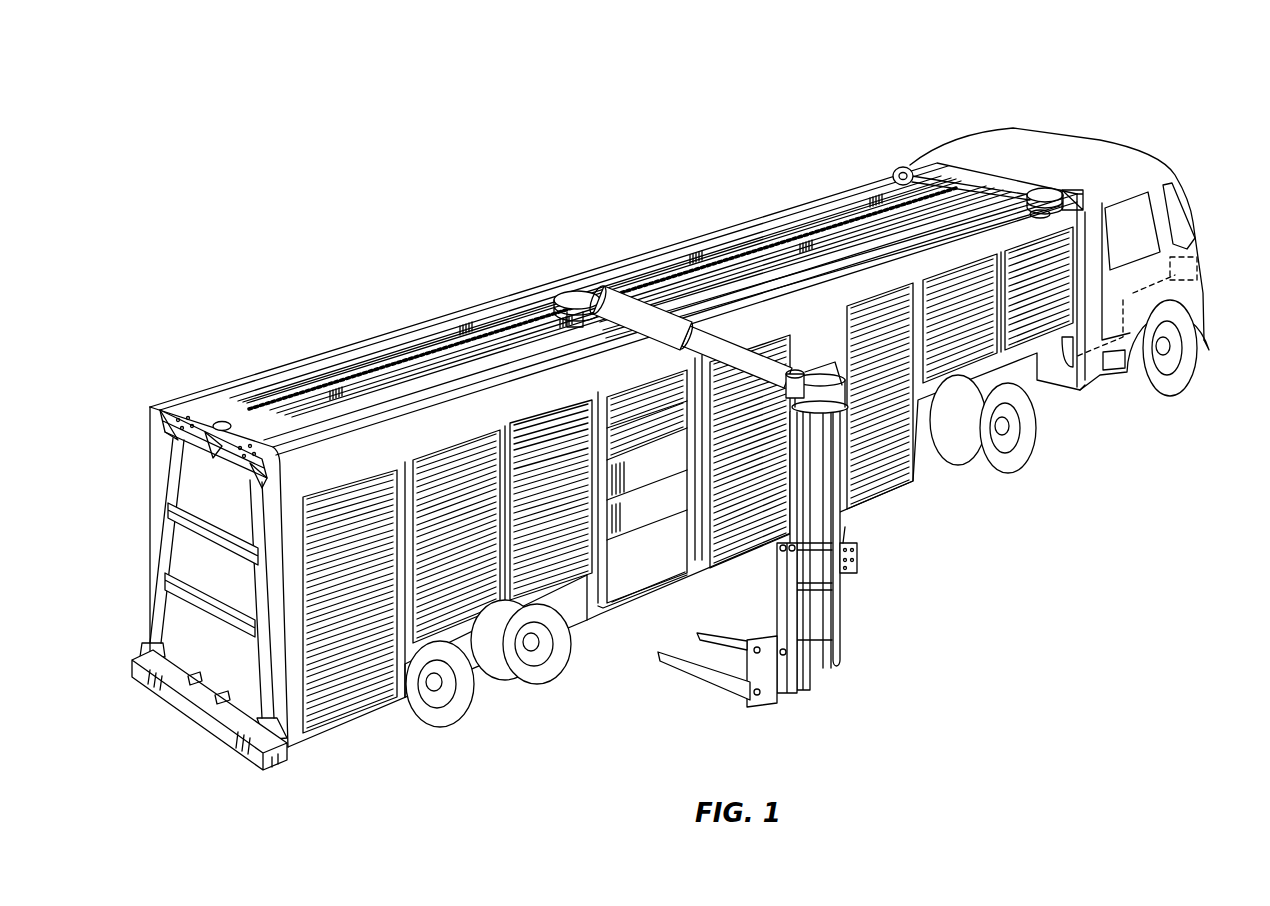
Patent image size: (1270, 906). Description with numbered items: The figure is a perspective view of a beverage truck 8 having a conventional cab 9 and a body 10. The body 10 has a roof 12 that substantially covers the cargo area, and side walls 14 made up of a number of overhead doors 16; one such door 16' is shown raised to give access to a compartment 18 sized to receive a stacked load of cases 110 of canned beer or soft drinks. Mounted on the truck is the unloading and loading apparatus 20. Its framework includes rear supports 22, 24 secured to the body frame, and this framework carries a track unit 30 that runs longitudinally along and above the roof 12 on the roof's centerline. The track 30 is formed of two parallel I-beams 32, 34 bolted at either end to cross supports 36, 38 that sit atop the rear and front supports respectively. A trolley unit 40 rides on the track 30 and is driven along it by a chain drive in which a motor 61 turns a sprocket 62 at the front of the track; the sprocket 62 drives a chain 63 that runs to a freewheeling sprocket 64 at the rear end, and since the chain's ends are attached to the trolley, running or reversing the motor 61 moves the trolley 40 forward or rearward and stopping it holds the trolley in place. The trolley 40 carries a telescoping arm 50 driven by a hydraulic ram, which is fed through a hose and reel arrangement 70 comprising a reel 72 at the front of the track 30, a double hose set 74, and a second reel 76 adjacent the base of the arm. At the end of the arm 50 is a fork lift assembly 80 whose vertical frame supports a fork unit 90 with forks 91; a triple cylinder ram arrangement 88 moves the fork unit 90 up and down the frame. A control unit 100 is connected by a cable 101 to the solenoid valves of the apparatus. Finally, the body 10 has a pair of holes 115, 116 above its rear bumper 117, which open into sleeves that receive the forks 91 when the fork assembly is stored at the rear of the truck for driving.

The beverage truck 8 is at (950, 487).
The cab 9 is at (1202, 286).
The body 10 is at (910, 503).
The roof 12 is at (735, 233).
The side walls 14 is at (405, 470).
The overhead doors 16 is at (688, 480).
The raised overhead door 16' is at (630, 399).
The compartment 18 is at (700, 560).
The unloading and loading apparatus 20 is at (514, 303).
The rear support 22 is at (173, 546).
The rear support 24 is at (252, 575).
The track unit 30 is at (495, 343).
The I-beam 32 is at (862, 203).
The I-beam 34 is at (861, 263).
The rear cross support 36 is at (160, 428).
The front cross support 38 is at (1082, 197).
The trolley unit 40 is at (604, 332).
The telescoping arm 50 is at (598, 282).
The motor 61 is at (901, 167).
The sprocket 62 is at (985, 182).
The chain 63 is at (420, 345).
The freewheeling sprocket 64 is at (220, 420).
The hose and reel arrangement 70 is at (1043, 213).
The reel 72 is at (1049, 188).
The double hose set 74 is at (1000, 229).
The second reel 76 is at (563, 291).
The fork lift assembly 80 is at (841, 664).
The triple cylinder ram arrangement 88 is at (822, 690).
The fork unit 90 is at (782, 712).
The forks 91 is at (843, 610).
The control unit 100 is at (860, 555).
The cable 101 is at (851, 529).
The cases 110 is at (625, 590).
The hole 115 is at (200, 673).
The hole 116 is at (226, 695).
The rear bumper 117 is at (205, 733).